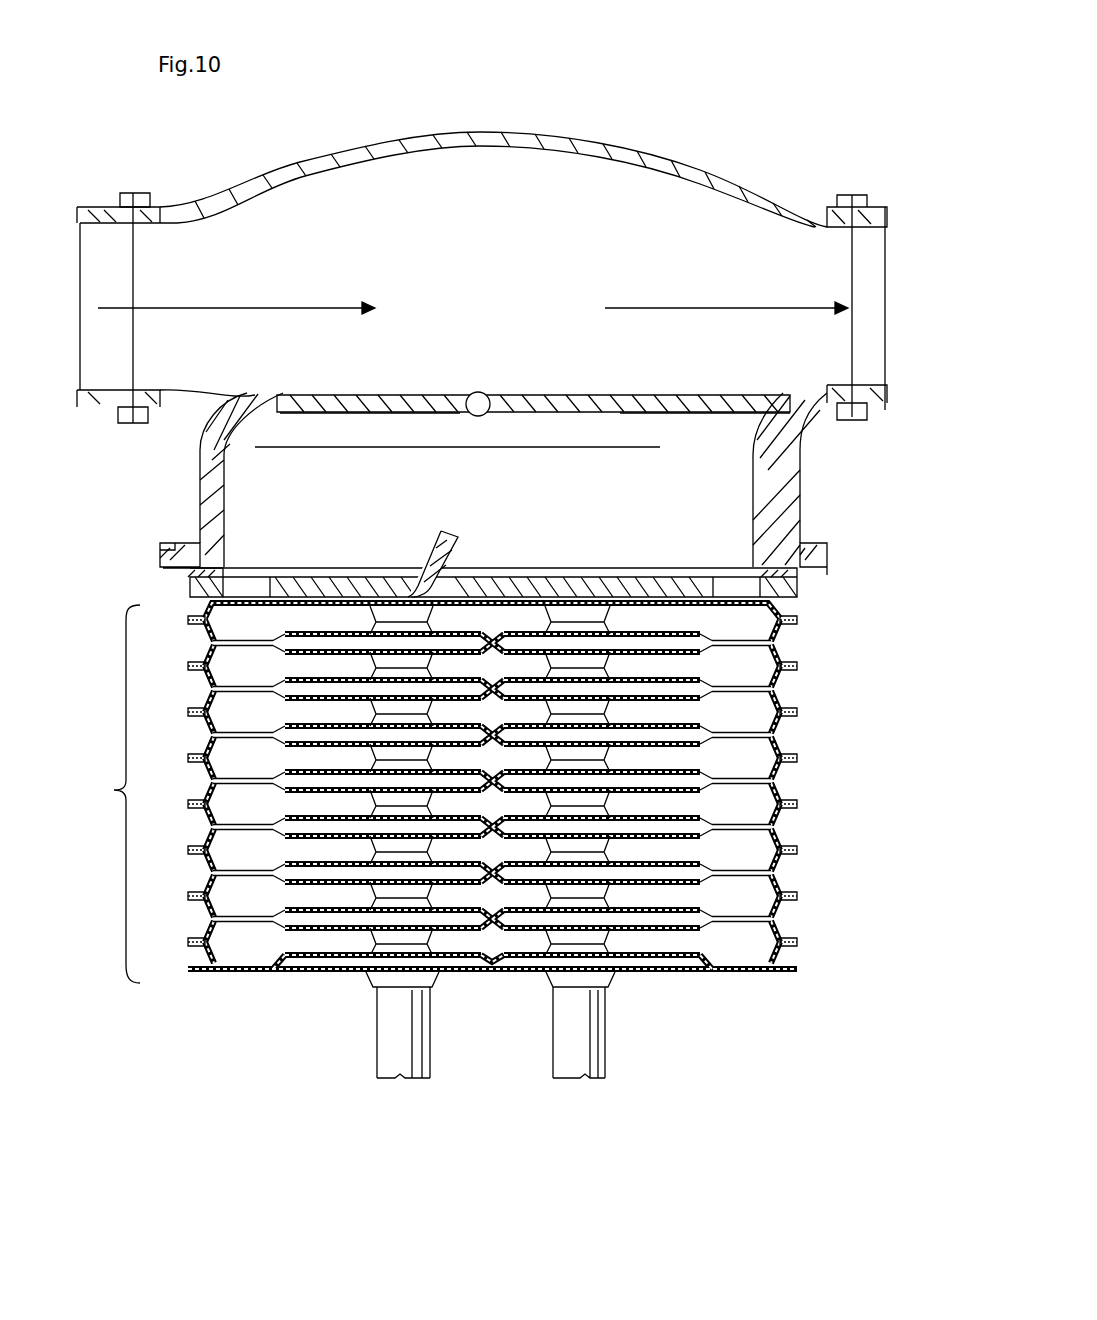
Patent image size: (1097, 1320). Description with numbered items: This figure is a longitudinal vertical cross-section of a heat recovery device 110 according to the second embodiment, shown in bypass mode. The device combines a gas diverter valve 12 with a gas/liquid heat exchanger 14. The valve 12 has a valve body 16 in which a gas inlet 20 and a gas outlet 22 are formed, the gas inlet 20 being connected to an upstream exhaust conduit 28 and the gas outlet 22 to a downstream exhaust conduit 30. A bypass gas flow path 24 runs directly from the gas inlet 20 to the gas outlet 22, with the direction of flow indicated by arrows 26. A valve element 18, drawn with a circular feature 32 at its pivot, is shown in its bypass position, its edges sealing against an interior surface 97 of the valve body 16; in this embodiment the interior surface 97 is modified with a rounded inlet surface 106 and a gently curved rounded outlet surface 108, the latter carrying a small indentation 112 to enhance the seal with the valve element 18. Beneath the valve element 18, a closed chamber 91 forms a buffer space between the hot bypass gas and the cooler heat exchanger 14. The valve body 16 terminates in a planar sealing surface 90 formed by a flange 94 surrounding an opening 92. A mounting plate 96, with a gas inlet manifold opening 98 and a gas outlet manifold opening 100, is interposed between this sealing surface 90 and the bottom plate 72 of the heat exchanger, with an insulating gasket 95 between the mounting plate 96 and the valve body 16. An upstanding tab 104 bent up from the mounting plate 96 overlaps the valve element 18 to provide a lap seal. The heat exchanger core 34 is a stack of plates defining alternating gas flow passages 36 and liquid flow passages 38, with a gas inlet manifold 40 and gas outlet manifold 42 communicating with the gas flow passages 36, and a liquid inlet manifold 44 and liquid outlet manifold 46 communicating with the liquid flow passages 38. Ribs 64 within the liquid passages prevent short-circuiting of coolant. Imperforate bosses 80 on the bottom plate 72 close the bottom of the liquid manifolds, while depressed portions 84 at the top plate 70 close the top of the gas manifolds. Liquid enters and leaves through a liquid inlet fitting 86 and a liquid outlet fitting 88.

The heat recovery device 110 is at (652, 107).
The gas diverter valve 12 is at (469, 126).
The valve body 16 is at (690, 168).
The upstream exhaust conduit 28 is at (103, 212).
The downstream exhaust conduit 30 is at (870, 205).
The gas inlet 20 is at (150, 283).
The gas outlet 22 is at (866, 308).
The arrows 26 is at (298, 306).
The bypass gas flow path 24 is at (494, 269).
The valve element 18 is at (386, 394).
The opening 32 is at (481, 393).
The rounded inlet surface 106 is at (256, 395).
The interior surface 97 is at (294, 440).
The indentation 112 is at (832, 396).
The rounded outlet surface 108 is at (752, 460).
The opening 92 is at (242, 500).
The flange 94 is at (164, 561).
The sealing surface 90 is at (815, 577).
The closed chamber 91 is at (534, 487).
The mounting plate 96 is at (336, 585).
The gas inlet manifold opening 98 is at (246, 585).
The gas outlet manifold opening 100 is at (738, 577).
The gasket 95 is at (538, 567).
The tab 104 is at (414, 535).
The heat exchanger core 34 is at (500, 862).
The bottom plate 72 is at (205, 606).
The gas/liquid heat exchanger 14 is at (822, 766).
The liquid flow passages 38 is at (682, 782).
The gas flow passages 36 is at (510, 629).
The imperforate bosses 80 is at (388, 610).
The liquid outlet manifold 46 is at (620, 936).
The depressed portions 84 is at (246, 975).
The top plate 70 is at (700, 975).
The gas outlet manifold 42 is at (746, 892).
The gas inlet manifold 40 is at (232, 848).
The rib 64 is at (497, 966).
The liquid inlet fitting 86 is at (382, 1053).
The liquid inlet manifold 44 is at (437, 960).
The liquid outlet fitting 88 is at (555, 1065).